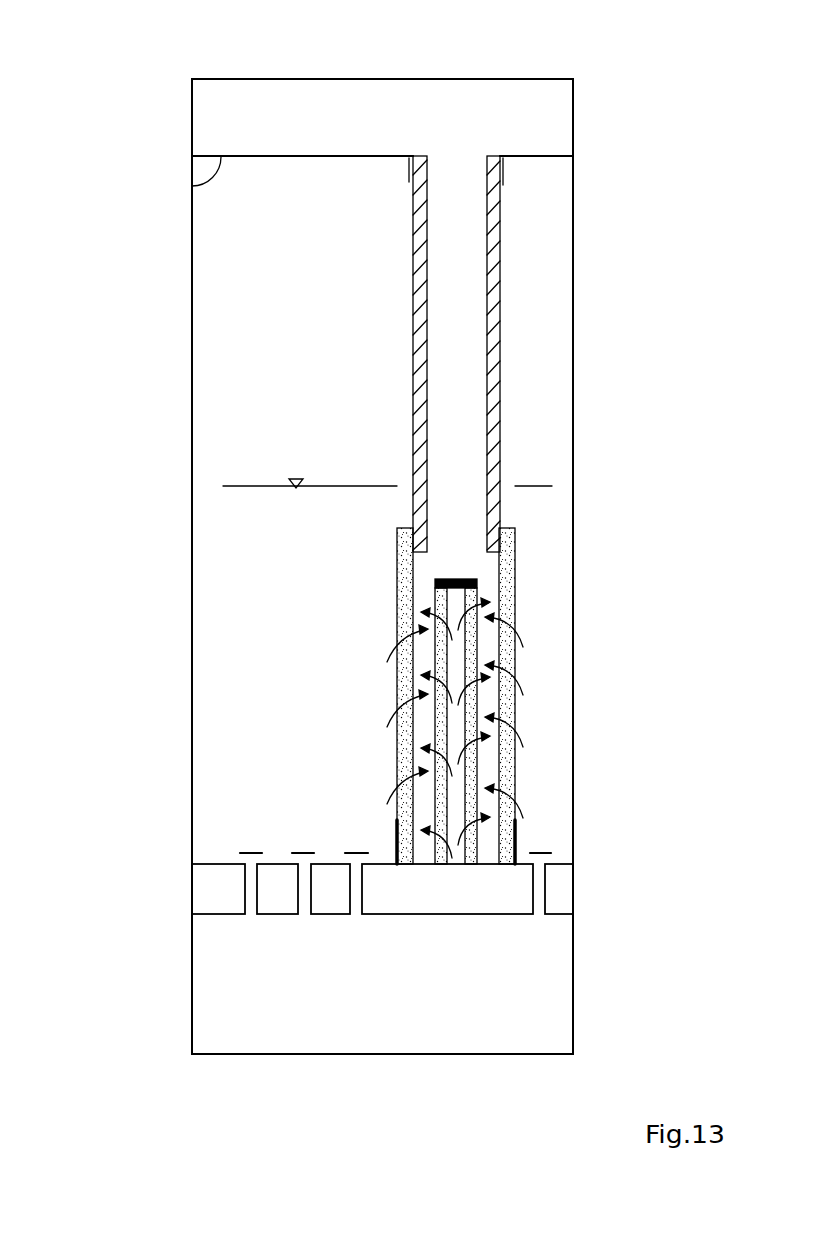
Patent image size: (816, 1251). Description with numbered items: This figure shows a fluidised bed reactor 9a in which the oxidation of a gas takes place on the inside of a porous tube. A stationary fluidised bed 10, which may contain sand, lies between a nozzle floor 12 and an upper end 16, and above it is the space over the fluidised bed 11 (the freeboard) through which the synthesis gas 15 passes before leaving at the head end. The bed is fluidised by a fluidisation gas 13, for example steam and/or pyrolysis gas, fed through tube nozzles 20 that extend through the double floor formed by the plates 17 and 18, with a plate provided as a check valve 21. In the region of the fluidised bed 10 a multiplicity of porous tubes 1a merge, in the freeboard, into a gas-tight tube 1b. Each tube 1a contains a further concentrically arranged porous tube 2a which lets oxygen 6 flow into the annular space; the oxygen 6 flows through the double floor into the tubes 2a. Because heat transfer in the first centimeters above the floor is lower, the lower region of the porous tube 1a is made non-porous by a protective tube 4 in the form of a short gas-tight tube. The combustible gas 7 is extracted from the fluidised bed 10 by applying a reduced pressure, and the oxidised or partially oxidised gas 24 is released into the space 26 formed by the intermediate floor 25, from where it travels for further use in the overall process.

The porous tube 1a is at (513, 577).
The gas-tight tube 1b is at (495, 372).
The porous inner tube 2a is at (465, 657).
The protective tube 4 is at (515, 835).
The oxygen 6 is at (648, 890).
The combustible gas 7 is at (392, 718).
The fluidised bed reactor 9a is at (150, 358).
The fluidised bed 10 is at (222, 600).
The space over the fluidised bed 11 is at (222, 272).
The nozzle floor 12 is at (423, 953).
The fluidisation gas 13 is at (383, 1073).
The synthesis gas 15 is at (634, 213).
The upper end 16 is at (253, 483).
The plate 17 is at (323, 914).
The plate 18 is at (330, 851).
The tube nozzle 20 is at (252, 914).
The check valve 21 is at (253, 851).
The oxidised or partially oxidised gas 24 is at (383, 79).
The intermediate floor 25 is at (192, 186).
The space 26 is at (222, 123).